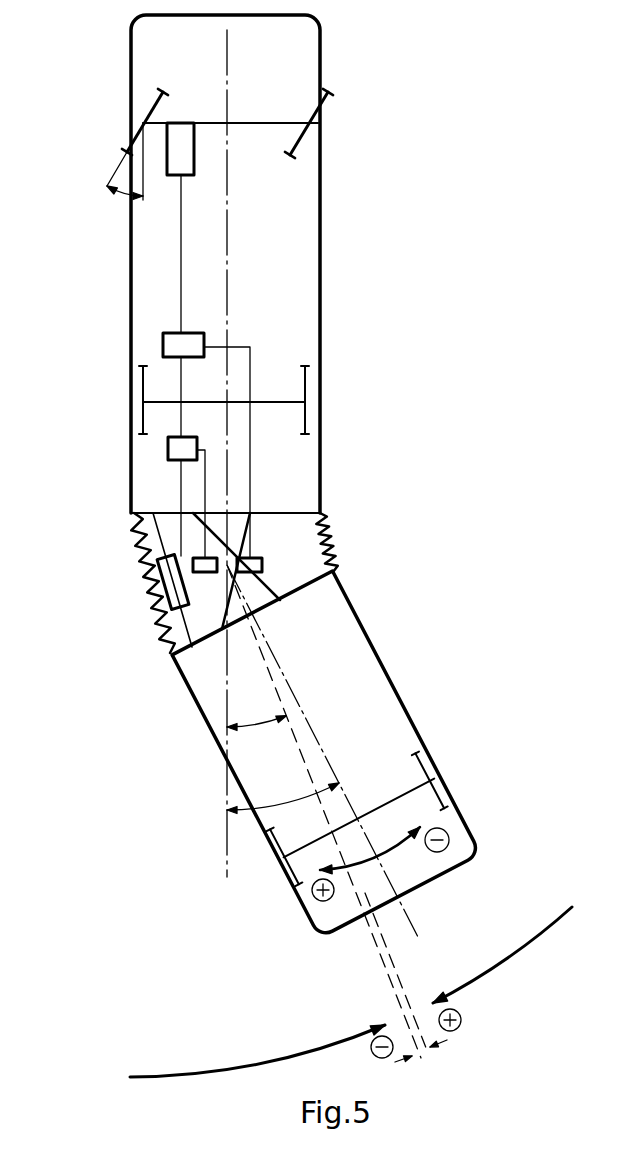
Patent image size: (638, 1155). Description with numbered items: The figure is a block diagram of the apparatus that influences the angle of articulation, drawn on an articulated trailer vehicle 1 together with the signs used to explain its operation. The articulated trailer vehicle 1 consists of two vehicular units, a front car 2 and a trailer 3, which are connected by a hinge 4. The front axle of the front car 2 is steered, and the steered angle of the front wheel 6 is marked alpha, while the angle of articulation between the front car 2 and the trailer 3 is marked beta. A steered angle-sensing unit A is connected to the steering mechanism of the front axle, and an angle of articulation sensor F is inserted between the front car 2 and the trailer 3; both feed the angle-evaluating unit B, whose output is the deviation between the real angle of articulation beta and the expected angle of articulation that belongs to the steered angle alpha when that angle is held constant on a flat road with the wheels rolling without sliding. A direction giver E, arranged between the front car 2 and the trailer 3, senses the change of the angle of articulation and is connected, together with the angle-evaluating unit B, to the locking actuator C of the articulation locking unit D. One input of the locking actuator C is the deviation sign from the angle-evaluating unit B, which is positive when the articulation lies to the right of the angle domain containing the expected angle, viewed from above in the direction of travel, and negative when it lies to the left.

The articulated trailer vehicle 1 is at (95, 432).
The front car 2 is at (293, 263).
The trailer 3 is at (363, 678).
The hinge 4 is at (235, 553).
The front wheel 6 is at (320, 151).
The steered angle-sensing unit A is at (181, 160).
The angle-evaluating unit B is at (190, 343).
The locking actuator C is at (188, 440).
The articulation locking unit D is at (168, 580).
The direction giver E is at (196, 573).
The angle of articulation sensor F is at (262, 566).